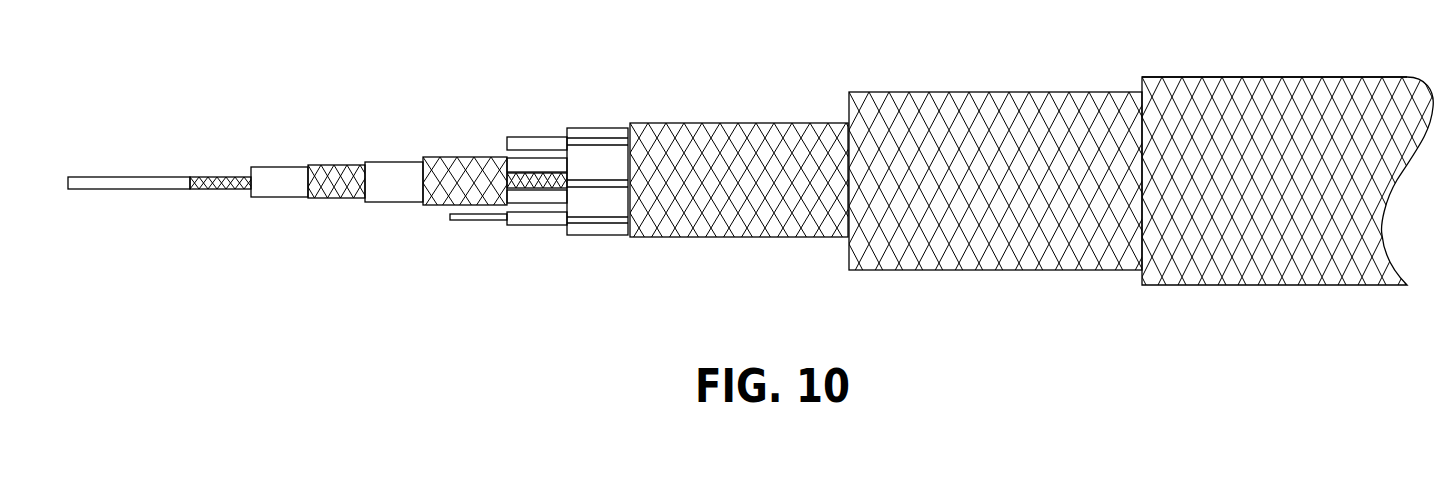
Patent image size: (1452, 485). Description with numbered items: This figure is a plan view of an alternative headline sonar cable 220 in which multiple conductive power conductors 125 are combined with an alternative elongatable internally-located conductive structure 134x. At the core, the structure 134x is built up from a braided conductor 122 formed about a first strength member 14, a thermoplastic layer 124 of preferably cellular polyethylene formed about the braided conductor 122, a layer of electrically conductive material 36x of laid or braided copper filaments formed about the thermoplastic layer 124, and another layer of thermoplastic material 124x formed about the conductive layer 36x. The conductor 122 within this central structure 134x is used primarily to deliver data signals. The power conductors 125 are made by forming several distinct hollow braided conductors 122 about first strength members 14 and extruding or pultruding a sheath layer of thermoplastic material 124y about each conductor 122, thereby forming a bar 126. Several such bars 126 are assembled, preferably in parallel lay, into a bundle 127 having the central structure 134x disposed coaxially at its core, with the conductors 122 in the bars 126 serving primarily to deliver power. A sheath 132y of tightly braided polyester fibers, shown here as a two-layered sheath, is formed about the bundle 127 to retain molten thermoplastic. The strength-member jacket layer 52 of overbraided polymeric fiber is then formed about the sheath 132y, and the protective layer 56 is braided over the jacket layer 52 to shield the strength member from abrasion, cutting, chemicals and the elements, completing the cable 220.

The first strength member 14 is at (138, 176).
The braided conductor 122 is at (225, 192).
The thermoplastic layer 124 is at (282, 165).
The layer of electrically conductive material 36x is at (330, 198).
The another layer of thermoplastic material 124x is at (400, 162).
The elongatable internally-located conductive structure 134x is at (437, 205).
The conductive power conductors 125 is at (527, 166).
The sheath layer of thermoplastic material 124y is at (580, 127).
The bundle 127 is at (588, 160).
The bar 126 is at (612, 163).
The sheath 132y is at (668, 237).
The strength-member jacket layer 52 is at (995, 270).
The protective layer 56 is at (1250, 250).
The headline sonar cable 220 is at (1262, 77).